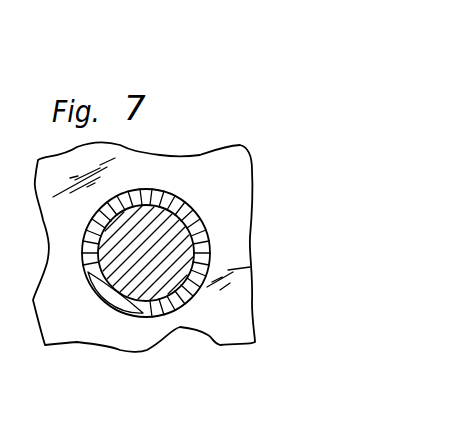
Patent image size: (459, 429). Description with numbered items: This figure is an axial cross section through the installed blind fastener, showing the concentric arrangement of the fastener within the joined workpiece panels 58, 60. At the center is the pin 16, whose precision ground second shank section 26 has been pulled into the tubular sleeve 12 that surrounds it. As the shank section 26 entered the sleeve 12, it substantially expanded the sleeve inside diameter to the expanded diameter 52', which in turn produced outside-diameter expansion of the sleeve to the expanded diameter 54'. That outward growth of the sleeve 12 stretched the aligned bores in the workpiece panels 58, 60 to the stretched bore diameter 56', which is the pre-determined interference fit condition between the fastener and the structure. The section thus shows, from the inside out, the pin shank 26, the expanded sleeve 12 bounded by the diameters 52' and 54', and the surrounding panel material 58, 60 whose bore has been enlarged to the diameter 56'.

The tubular sleeve 12 is at (140, 312).
The pin 16 is at (156, 278).
The second shank section 26 is at (185, 288).
The expanded sleeve inside diameter 52' is at (208, 253).
The expanded sleeve outside diameter 54' is at (205, 233).
The stretched workpiece bore diameter 56' is at (201, 250).
The workpiece panel 58 is at (140, 285).
The workpiece panel 60 is at (82, 335).